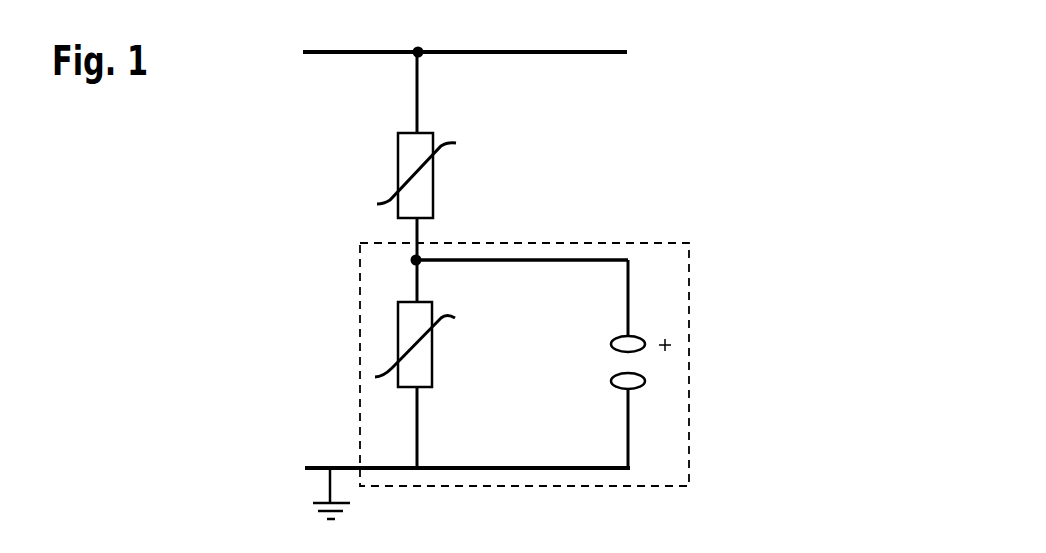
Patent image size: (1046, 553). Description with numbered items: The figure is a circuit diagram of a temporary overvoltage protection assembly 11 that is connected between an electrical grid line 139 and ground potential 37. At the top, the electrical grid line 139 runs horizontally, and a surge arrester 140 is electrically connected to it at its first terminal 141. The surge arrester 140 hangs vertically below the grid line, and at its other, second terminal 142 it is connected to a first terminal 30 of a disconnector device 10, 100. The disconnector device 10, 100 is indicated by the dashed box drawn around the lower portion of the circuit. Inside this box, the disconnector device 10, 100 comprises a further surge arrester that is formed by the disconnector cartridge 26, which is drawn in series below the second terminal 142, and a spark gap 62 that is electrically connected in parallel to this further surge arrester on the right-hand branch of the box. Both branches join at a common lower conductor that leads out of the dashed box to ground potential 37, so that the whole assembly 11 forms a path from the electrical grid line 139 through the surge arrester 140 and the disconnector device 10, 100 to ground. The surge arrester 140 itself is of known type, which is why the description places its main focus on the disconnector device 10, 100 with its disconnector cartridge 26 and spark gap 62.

The temporary overvoltage protection assembly 11 is at (677, 165).
The electrical grid line 139 is at (612, 52).
The first terminal 141 is at (428, 63).
The surge arrester 140 is at (386, 173).
The first terminal 30 is at (405, 261).
The second terminal 142 is at (427, 268).
The disconnector cartridge 26 is at (388, 352).
The spark gap 62 is at (650, 367).
The ground potential 37 is at (312, 519).
The disconnector device 10 is at (610, 350).
The disconnector device 100 is at (690, 265).